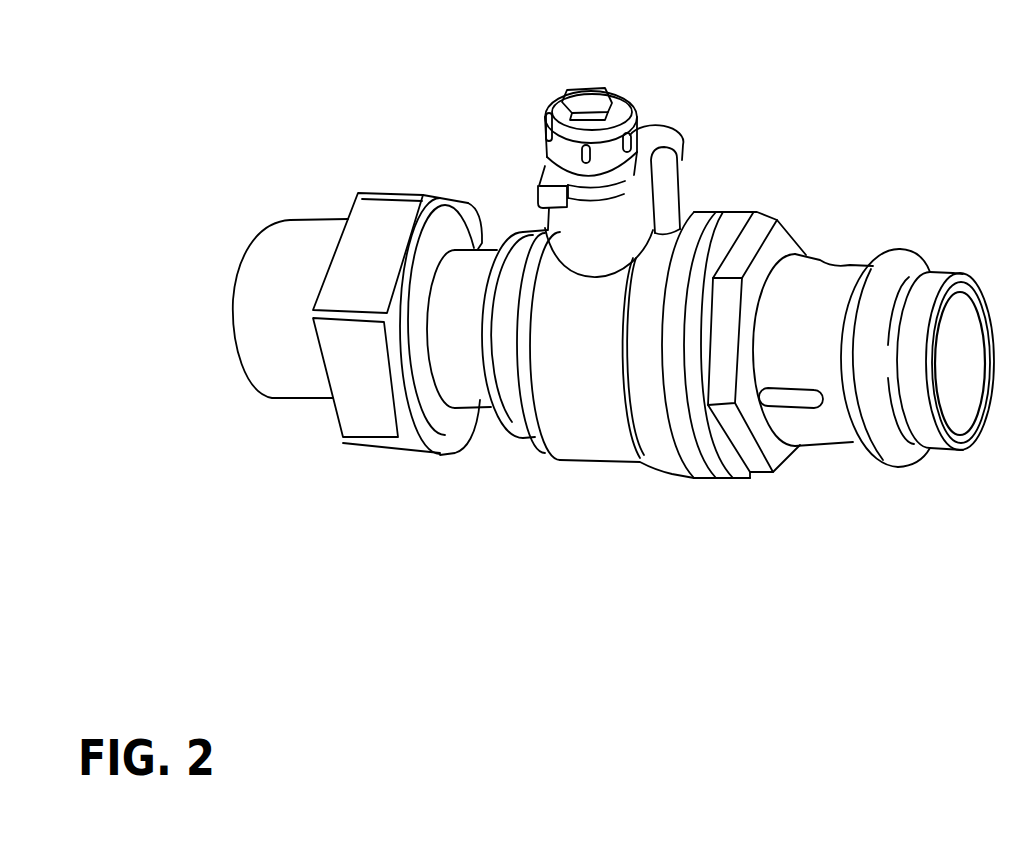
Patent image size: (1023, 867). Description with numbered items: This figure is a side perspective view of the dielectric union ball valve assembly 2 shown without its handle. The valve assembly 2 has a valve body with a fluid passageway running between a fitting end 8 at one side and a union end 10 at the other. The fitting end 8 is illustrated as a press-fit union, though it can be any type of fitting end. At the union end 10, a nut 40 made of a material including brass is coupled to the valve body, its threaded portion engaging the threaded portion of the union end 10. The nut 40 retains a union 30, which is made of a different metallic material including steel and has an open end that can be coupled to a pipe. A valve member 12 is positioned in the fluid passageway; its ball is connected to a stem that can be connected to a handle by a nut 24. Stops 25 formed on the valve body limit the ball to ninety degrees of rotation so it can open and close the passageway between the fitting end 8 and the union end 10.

The dielectric union ball valve assembly 2 is at (826, 168).
The fitting end 8 is at (852, 443).
The union end 10 is at (472, 420).
The valve member 12 is at (573, 235).
The nut 24 is at (638, 120).
The stops 25 is at (665, 197).
The union 30 is at (272, 372).
The nut 40 is at (383, 440).